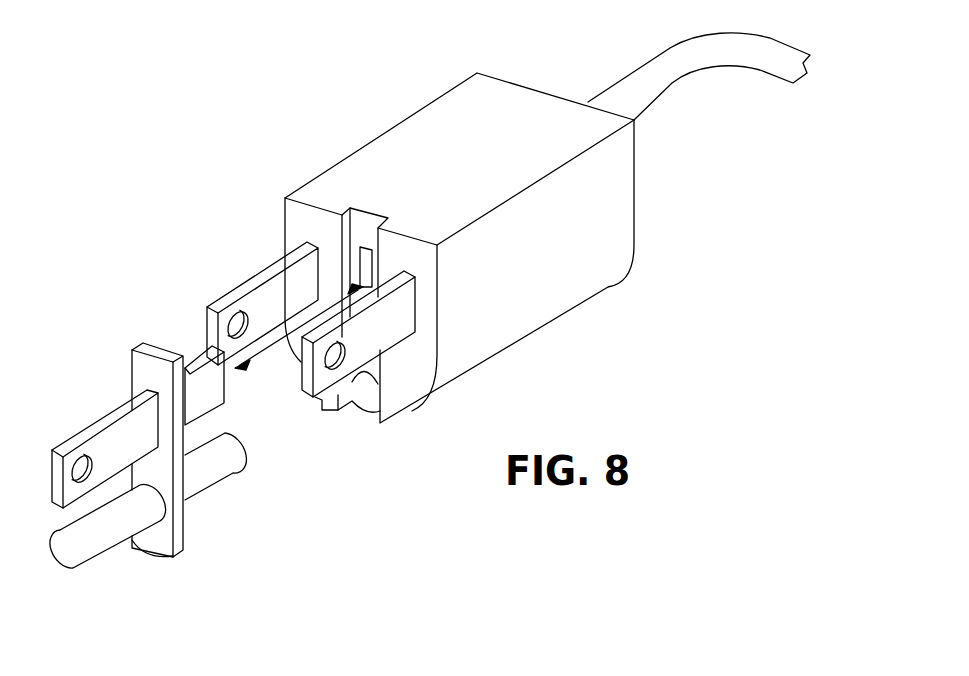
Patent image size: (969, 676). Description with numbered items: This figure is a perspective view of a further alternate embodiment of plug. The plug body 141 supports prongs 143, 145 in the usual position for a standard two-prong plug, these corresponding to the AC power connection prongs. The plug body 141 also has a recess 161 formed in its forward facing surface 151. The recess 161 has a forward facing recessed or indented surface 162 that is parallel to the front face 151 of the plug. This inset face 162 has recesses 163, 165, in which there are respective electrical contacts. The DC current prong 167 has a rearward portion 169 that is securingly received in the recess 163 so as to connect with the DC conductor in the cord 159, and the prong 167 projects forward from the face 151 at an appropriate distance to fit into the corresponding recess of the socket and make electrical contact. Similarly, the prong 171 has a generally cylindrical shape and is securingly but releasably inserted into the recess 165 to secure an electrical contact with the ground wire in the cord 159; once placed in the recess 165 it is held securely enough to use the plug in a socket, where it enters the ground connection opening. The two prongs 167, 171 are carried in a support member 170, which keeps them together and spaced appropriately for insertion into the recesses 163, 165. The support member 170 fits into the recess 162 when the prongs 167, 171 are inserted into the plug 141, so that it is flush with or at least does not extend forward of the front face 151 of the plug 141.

The plug body 141 is at (570, 295).
The prong 143 is at (250, 283).
The prong 145 is at (383, 342).
The forward facing surface 151 is at (427, 310).
The cord 159 is at (717, 57).
The recess 161 is at (348, 222).
The recessed or indented surface 162 is at (372, 213).
The recess 163 is at (368, 243).
The recess 165 is at (370, 381).
The DC current prong 167 is at (90, 422).
The rearward portion 169 is at (188, 353).
The support member 170 is at (175, 525).
The prong 171 is at (110, 537).